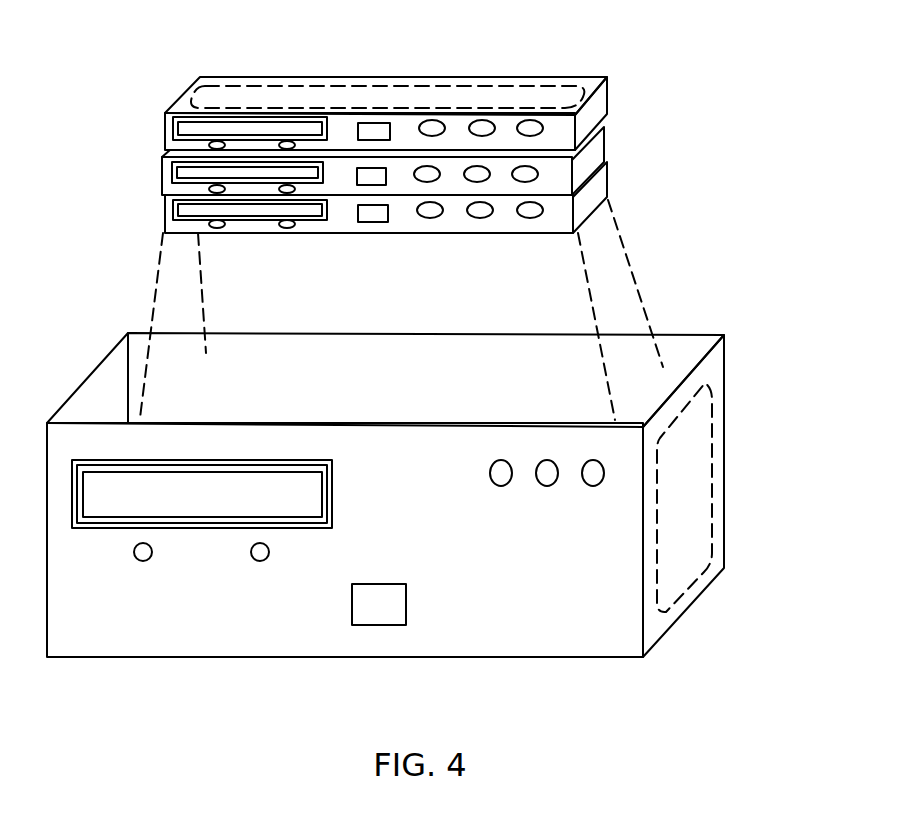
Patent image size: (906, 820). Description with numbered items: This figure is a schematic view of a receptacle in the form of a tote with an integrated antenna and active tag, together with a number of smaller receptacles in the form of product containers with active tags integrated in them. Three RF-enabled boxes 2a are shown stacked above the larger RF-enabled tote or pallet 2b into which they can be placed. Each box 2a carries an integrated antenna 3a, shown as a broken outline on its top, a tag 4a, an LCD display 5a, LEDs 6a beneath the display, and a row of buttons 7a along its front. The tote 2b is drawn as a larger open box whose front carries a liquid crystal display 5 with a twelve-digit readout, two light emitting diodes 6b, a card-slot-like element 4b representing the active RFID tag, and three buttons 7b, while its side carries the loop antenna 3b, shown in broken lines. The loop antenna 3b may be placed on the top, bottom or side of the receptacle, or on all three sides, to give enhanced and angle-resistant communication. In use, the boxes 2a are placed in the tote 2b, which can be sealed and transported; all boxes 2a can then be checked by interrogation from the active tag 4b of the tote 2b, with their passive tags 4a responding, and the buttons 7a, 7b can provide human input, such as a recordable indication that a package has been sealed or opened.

The RF-enabled box 2a is at (607, 97).
The integrated antenna 3a is at (507, 85).
The tag 4a is at (367, 168).
The LCD display 5a is at (170, 213).
The LED 6a is at (221, 228).
The button 7a is at (432, 181).
The RF-enabled tote or pallet 2b is at (723, 467).
The loop antenna 3b is at (690, 581).
The active RFID tag 4b is at (372, 626).
The liquid crystal display 5 is at (103, 529).
The light emitting diode 6b is at (146, 560).
The button 7b is at (503, 486).